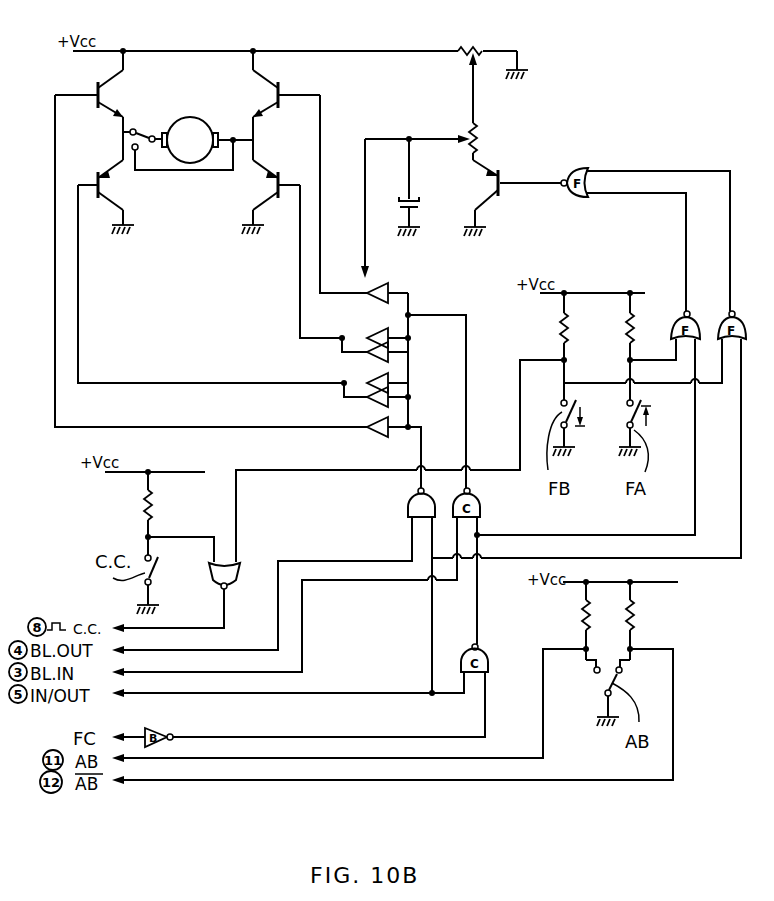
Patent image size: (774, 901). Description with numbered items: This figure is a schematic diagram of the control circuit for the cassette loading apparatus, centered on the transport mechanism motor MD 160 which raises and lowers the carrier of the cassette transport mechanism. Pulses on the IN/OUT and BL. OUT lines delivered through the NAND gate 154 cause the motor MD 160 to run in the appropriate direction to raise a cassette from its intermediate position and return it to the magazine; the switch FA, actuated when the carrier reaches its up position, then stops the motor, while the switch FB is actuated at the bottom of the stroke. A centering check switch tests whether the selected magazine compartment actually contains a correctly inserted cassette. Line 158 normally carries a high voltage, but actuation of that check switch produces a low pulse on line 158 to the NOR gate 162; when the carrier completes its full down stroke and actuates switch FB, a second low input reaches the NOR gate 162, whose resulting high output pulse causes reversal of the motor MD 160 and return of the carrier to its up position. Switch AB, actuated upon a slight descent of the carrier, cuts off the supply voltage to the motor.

The NAND gate 154 is at (410, 508).
The line 158 is at (185, 537).
The motor MD 160 is at (208, 155).
The NOR gate 162 is at (240, 567).